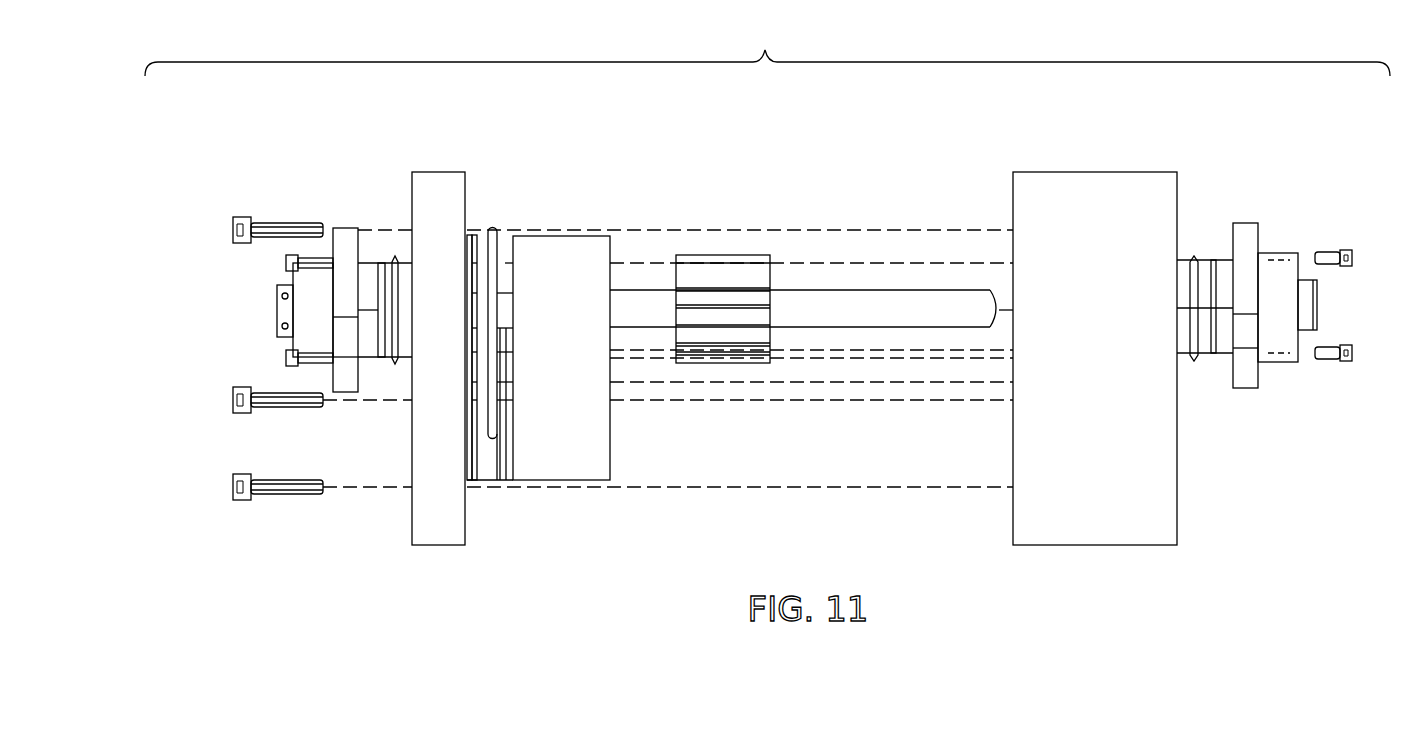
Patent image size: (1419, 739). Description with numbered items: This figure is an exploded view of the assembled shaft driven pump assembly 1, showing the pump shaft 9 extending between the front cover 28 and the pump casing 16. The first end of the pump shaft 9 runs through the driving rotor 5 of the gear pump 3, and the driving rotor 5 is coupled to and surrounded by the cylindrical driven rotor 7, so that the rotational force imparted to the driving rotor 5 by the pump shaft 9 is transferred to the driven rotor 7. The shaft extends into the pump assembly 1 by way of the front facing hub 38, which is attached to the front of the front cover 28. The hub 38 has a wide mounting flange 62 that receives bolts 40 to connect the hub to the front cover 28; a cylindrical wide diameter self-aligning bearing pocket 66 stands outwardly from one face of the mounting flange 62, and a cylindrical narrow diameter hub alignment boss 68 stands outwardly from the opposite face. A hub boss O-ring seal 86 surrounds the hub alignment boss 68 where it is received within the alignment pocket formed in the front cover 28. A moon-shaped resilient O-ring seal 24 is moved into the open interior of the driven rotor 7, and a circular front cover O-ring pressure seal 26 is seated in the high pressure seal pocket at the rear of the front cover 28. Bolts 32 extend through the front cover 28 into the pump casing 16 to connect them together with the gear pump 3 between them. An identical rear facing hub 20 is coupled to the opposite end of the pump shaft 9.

The pump assembly 1 is at (767, 45).
The gear pump 3 is at (582, 200).
The driving rotor 5 is at (724, 255).
The driven rotor 7 is at (591, 480).
The pump shaft 9 is at (845, 300).
The pump casing 16 is at (1073, 172).
The rear facing hub 20 is at (1262, 188).
The O-ring seal 24 is at (503, 437).
The front cover O-ring pressure seal 26 is at (487, 490).
The front cover 28 is at (433, 547).
The bolts 32 is at (233, 231).
The hub 38 is at (364, 200).
The bolts 40 is at (1341, 250).
The mounting flange 62 is at (342, 228).
The self-aligning bearing pocket 66 is at (293, 314).
The hub alignment boss 68 is at (370, 360).
The hub boss O-ring seal 86 is at (397, 256).